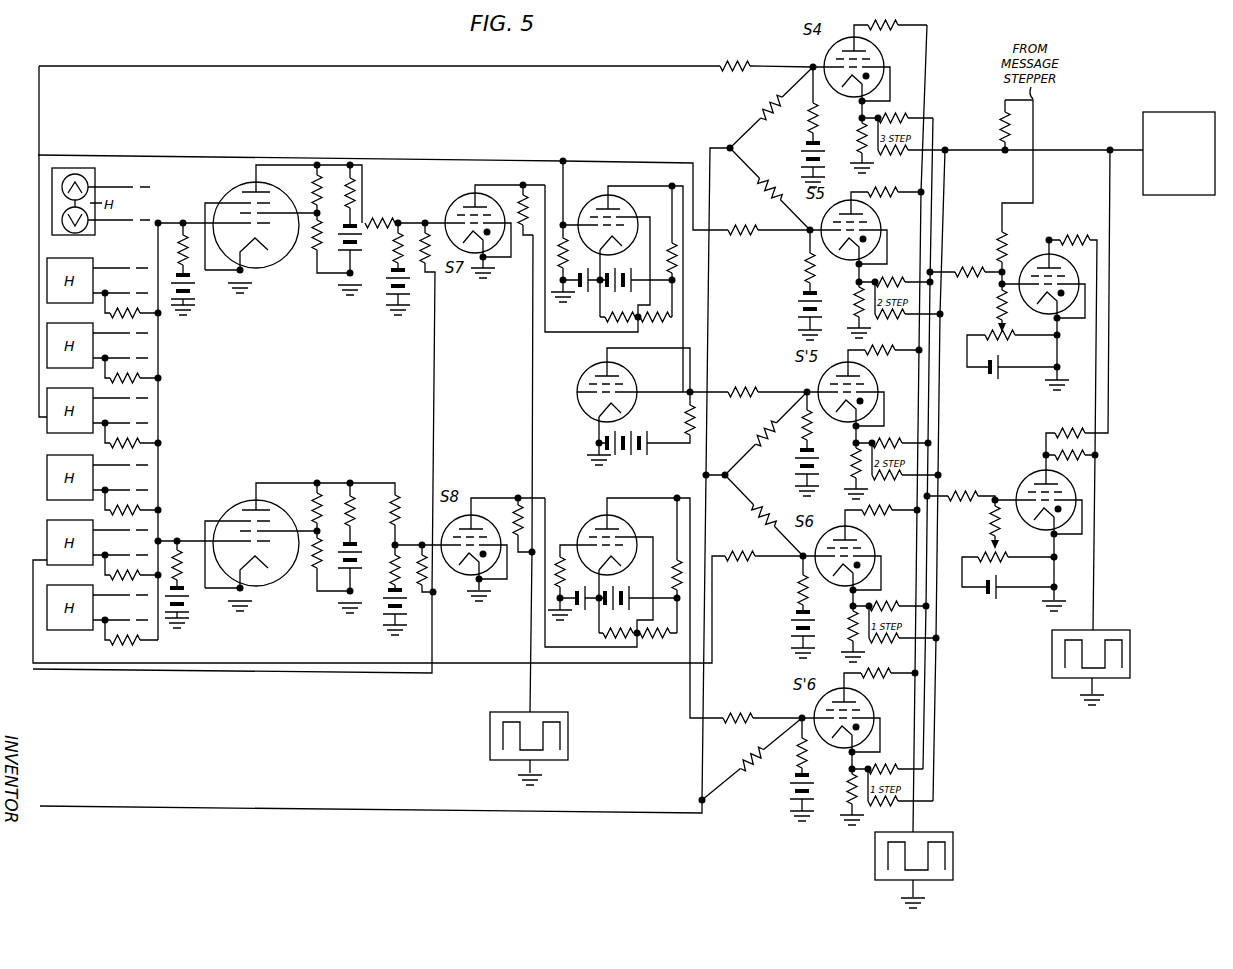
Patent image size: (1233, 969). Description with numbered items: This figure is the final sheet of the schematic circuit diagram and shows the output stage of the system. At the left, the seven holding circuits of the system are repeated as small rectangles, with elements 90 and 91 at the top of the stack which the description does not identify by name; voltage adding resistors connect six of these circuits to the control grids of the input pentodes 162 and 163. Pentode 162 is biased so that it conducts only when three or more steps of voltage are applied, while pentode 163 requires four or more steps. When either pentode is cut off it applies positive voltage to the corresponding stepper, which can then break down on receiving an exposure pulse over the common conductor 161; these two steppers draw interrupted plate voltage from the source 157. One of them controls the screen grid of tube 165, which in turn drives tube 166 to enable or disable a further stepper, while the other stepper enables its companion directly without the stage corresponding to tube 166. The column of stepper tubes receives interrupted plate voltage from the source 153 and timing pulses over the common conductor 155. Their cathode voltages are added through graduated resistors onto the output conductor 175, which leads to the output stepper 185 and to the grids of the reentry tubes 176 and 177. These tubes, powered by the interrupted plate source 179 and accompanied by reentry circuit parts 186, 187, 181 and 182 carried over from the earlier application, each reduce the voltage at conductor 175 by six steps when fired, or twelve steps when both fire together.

The input unit 90 is at (86, 184).
The input unit 91 is at (88, 230).
The common conductor 161 is at (303, 676).
The input pentode 162 is at (238, 192).
The pentode 163 is at (238, 500).
The tube 165 is at (602, 196).
The tube 166 is at (582, 374).
The source 157 is at (568, 742).
The common conductor 155 is at (447, 806).
The source 153 is at (952, 858).
The output conductor 175 is at (937, 746).
The resistor 186 is at (1000, 132).
The resistor 187 is at (997, 234).
The resistor 181 is at (968, 266).
The reentry tube 176 is at (1044, 252).
The battery 182 is at (996, 382).
The reentry tube 177 is at (1024, 484).
The source 179 is at (1052, 671).
The output stepper 185 is at (1160, 198).